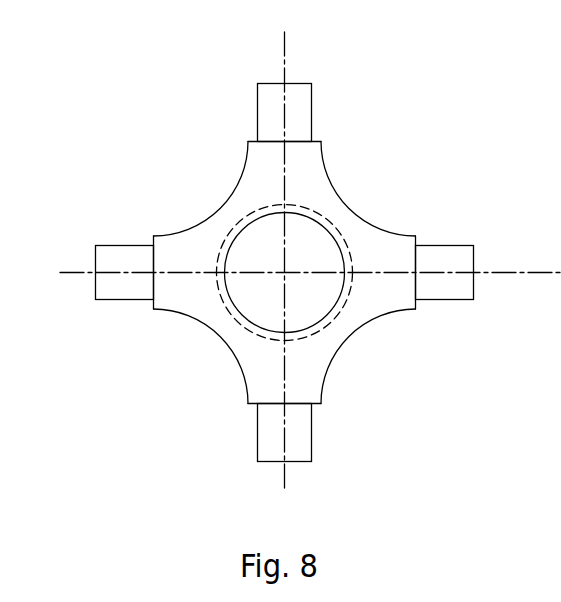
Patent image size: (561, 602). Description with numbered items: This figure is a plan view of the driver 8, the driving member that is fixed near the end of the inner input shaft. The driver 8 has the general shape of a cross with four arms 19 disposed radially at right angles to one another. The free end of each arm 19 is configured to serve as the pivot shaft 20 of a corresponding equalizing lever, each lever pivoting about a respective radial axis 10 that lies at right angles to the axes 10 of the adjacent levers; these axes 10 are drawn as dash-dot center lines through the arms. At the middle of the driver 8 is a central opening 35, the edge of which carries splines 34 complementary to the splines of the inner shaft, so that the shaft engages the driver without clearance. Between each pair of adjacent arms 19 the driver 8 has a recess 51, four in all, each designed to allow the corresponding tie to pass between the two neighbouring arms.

The driver 8 is at (263, 271).
The radial axis 10 is at (283, 60).
The arm 19 is at (175, 233).
The pivot shaft 20 is at (312, 106).
The splines 34 is at (334, 231).
The central opening 35 is at (310, 292).
The recess 51 is at (230, 197).